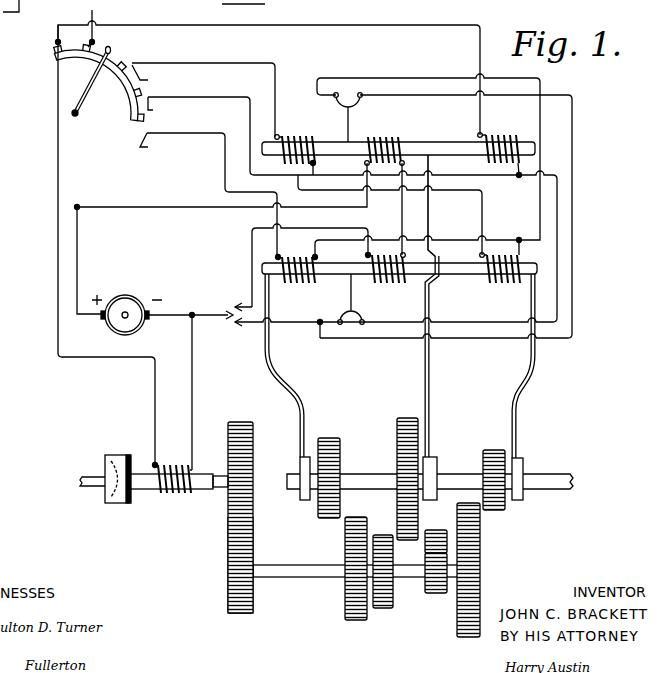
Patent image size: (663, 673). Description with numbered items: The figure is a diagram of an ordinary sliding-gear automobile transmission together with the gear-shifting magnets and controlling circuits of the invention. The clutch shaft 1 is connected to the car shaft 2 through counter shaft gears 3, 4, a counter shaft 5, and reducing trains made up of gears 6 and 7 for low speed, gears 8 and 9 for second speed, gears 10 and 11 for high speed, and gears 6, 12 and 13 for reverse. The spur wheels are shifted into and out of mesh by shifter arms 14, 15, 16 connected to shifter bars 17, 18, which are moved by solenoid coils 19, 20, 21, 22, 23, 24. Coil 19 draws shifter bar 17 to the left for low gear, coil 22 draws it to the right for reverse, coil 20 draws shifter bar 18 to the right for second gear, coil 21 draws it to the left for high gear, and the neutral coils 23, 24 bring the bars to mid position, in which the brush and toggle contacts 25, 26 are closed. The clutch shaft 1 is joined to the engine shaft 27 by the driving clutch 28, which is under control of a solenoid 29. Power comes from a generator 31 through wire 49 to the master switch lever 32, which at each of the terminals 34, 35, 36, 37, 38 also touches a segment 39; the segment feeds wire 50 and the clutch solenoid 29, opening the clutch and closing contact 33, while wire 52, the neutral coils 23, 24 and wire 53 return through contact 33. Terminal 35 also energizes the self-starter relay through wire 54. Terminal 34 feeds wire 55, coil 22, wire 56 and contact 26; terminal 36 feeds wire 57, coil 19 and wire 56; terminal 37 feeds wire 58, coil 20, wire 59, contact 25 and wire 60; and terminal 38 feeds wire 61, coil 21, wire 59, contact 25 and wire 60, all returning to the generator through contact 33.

The clutch shaft 1 is at (218, 485).
The car shaft 2 is at (550, 474).
The counter shaft gear 3 is at (254, 449).
The counter shaft gear 4 is at (228, 583).
The counter shaft 5 is at (298, 565).
The gear of low speed and reverse trains 6 is at (397, 452).
The gear of low speed train 7 is at (388, 610).
The gear of second speed train 8 is at (330, 440).
The gear of second speed train 9 is at (345, 597).
The gear of high speed train 10 is at (492, 452).
The gear of high speed train 11 is at (482, 598).
The gear of reverse train 12 is at (436, 530).
The gear of reverse train 13 is at (432, 594).
The shifter arm 14 is at (433, 378).
The shifter arm 15 is at (276, 364).
The shifter arm 16 is at (531, 376).
The shifter bar 17 is at (437, 146).
The shifter bar 18 is at (461, 276).
The solenoid coil 19 is at (296, 137).
The solenoid coil 20 is at (505, 284).
The solenoid coil 21 is at (297, 284).
The solenoid coil 22 is at (501, 136).
The neutral solenoid coil 23 is at (386, 137).
The neutral solenoid coil 24 is at (387, 284).
The brush and toggle contact 25 is at (348, 110).
The brush and toggle contact 26 is at (351, 306).
The engine shaft 27 is at (90, 477).
The driving clutch 28 is at (117, 503).
The clutch-actuating solenoid 29 is at (173, 490).
The generator 31 is at (125, 297).
The master switch lever 32 is at (90, 96).
The contact 33 is at (221, 307).
The terminal 34 is at (58, 42).
The terminal 35 is at (95, 42).
The terminal 36 is at (151, 75).
The terminal 37 is at (163, 106).
The terminal 38 is at (154, 147).
The segment 39 is at (130, 107).
The wire 49 is at (80, 243).
The wire 50 is at (58, 167).
The wire 52 is at (177, 207).
The wire 53 is at (252, 253).
The wire 54 is at (92, 13).
The wire 55 is at (331, 25).
The wire 56 is at (573, 225).
The wire 57 is at (213, 63).
The wire 58 is at (212, 97).
The wire 59 is at (540, 207).
The wire 60 is at (573, 163).
The wire 61 is at (207, 133).